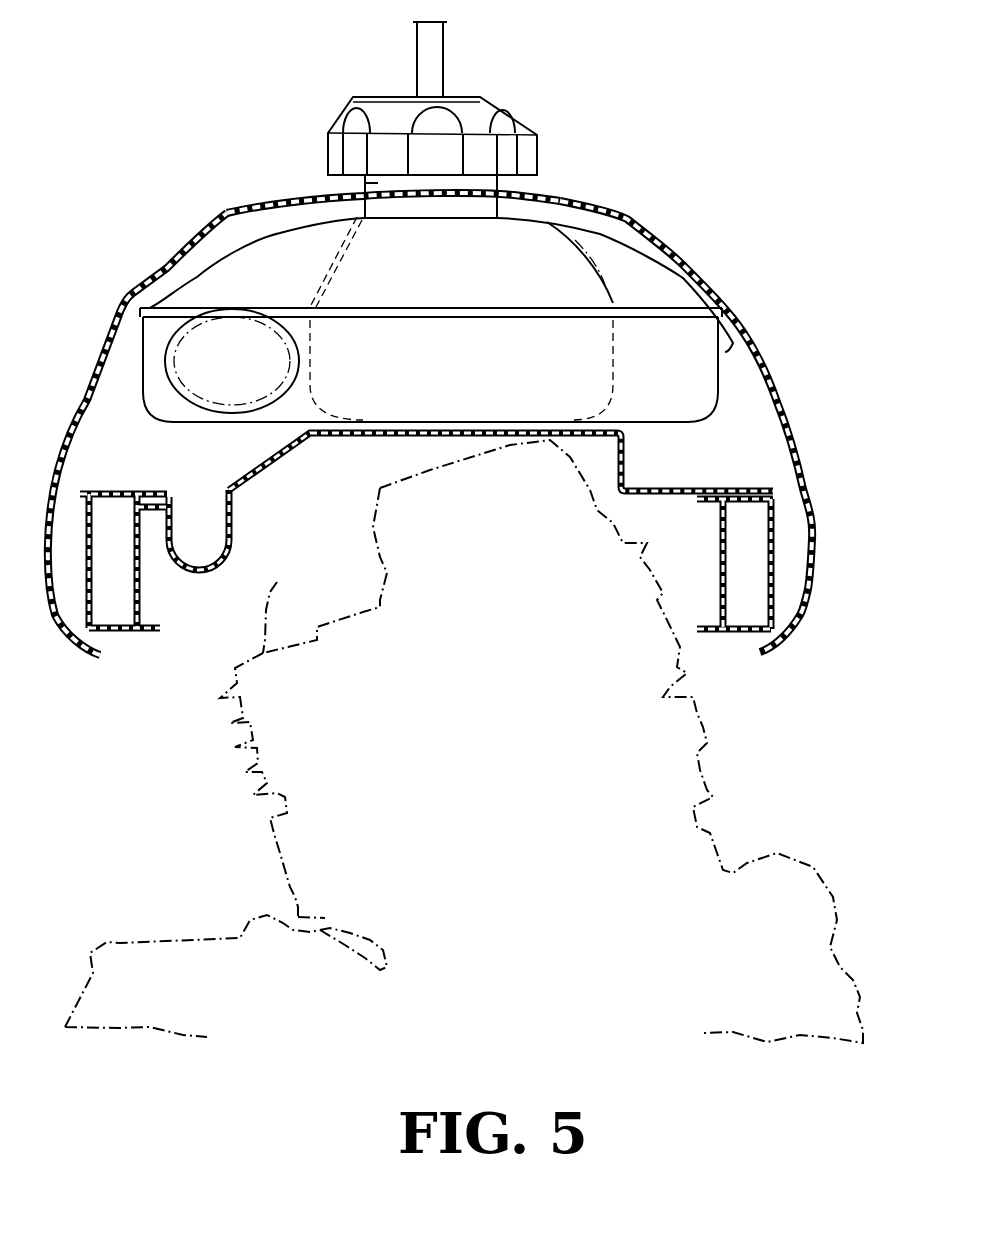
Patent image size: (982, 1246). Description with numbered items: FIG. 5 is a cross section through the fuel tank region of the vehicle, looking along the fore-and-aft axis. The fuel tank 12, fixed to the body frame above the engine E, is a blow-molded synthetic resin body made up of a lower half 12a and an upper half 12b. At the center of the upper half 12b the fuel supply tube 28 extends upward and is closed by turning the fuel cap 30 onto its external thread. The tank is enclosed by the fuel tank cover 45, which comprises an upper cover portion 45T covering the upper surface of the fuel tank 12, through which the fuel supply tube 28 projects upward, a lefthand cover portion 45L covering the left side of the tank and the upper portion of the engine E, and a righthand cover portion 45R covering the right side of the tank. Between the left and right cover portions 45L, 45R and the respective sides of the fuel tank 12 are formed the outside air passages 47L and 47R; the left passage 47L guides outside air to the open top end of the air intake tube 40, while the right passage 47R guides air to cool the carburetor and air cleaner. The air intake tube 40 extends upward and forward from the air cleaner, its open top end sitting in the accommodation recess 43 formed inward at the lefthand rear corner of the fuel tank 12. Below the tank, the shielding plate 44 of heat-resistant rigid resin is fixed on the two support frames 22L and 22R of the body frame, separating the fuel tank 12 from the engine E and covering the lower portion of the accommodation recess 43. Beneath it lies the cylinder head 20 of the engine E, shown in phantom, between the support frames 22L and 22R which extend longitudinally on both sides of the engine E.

The fuel tank 12 is at (477, 266).
The lower half 12a is at (657, 340).
The upper half 12b is at (617, 232).
The cylinder head 20 is at (275, 587).
The support frame 22L is at (125, 632).
The support frame 22R is at (737, 633).
The fuel supply tube 28 is at (378, 183).
The fuel cap 30 is at (520, 127).
The air intake tube 40 is at (313, 335).
The accommodation recess 43 is at (323, 273).
The shielding plate 44 is at (470, 430).
The fuel tank cover 45 is at (450, 350).
The upper cover portion 45T is at (443, 188).
The lefthand cover portion 45L is at (93, 370).
The righthand cover portion 45R is at (767, 377).
The outside air passage 47L is at (137, 335).
The outside air passage 47R is at (733, 343).
The engine E is at (236, 794).